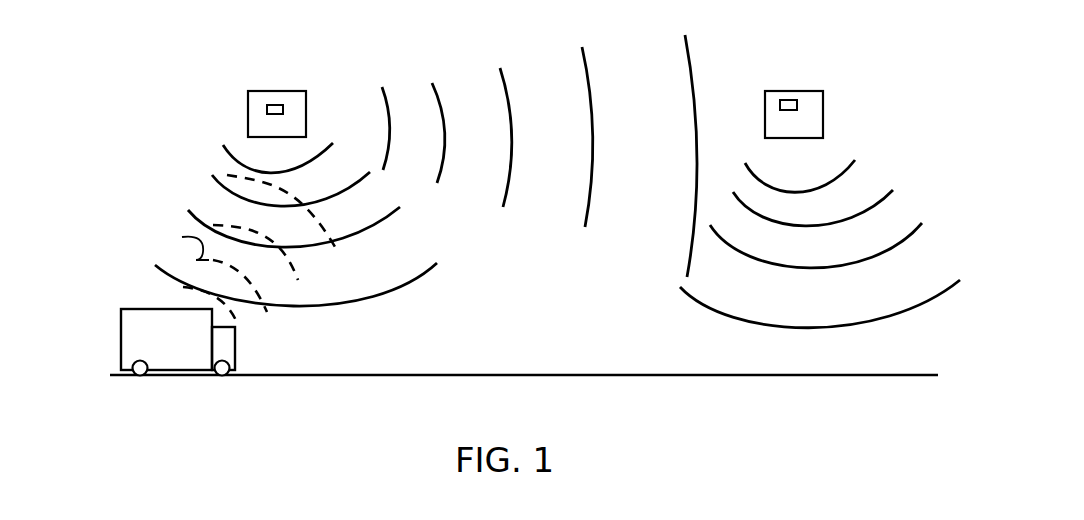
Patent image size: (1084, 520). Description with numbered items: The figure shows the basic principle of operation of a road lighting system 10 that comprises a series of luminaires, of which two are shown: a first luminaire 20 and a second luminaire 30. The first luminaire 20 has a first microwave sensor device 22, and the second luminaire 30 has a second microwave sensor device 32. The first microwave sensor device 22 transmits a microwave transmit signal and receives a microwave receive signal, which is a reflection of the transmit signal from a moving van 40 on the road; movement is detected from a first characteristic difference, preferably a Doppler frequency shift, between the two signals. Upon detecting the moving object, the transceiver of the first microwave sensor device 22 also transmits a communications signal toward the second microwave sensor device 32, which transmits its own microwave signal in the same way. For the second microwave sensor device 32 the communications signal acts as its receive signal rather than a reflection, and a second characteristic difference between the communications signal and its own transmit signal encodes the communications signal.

The road lighting system 10 is at (142, 90).
The first luminaire 20 is at (248, 105).
The first microwave sensor device 22 is at (271, 103).
The second luminaire 30 is at (765, 102).
The second microwave sensor device 32 is at (785, 100).
The moving van 40 is at (122, 327).